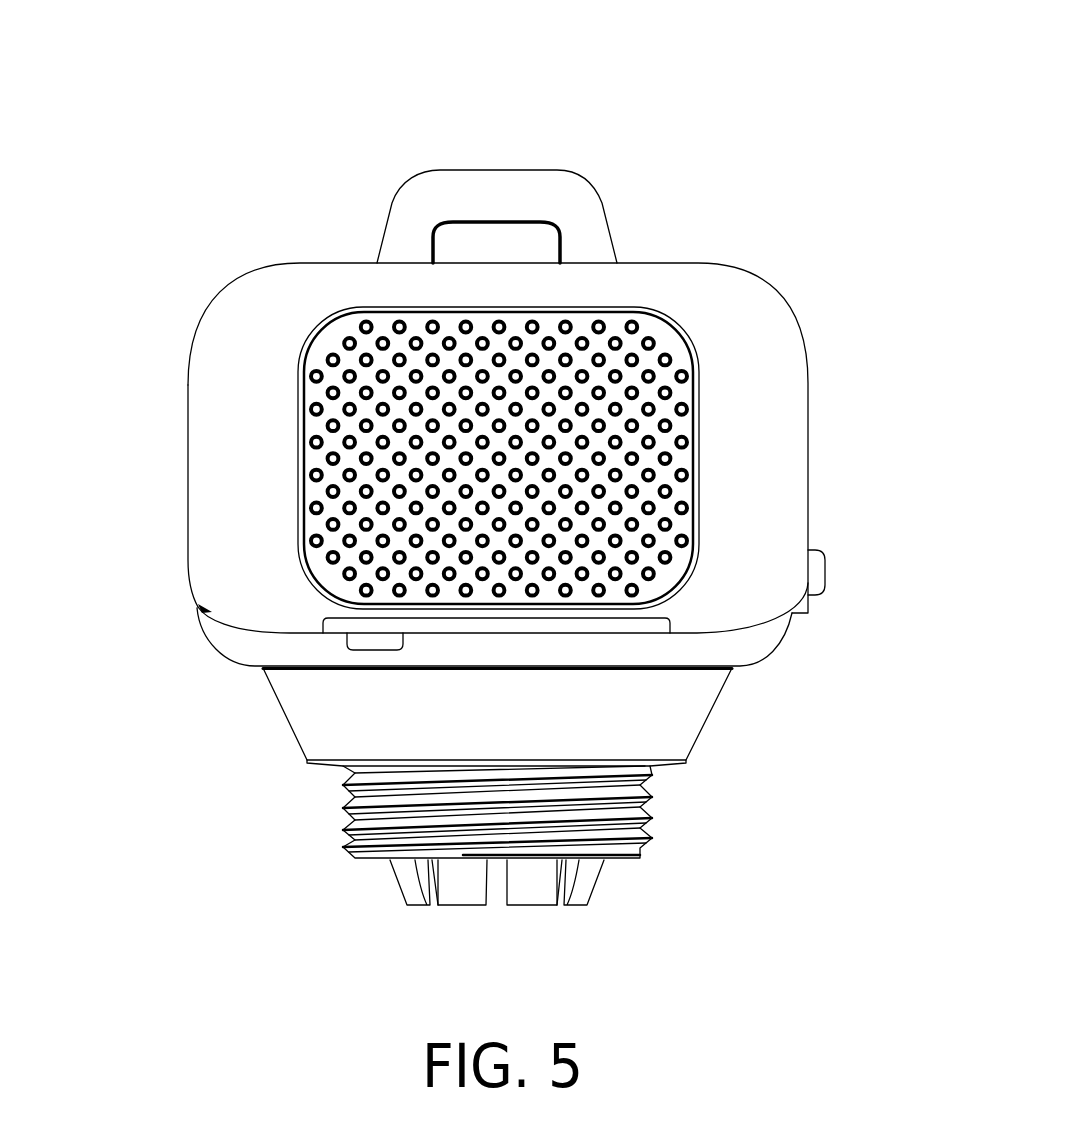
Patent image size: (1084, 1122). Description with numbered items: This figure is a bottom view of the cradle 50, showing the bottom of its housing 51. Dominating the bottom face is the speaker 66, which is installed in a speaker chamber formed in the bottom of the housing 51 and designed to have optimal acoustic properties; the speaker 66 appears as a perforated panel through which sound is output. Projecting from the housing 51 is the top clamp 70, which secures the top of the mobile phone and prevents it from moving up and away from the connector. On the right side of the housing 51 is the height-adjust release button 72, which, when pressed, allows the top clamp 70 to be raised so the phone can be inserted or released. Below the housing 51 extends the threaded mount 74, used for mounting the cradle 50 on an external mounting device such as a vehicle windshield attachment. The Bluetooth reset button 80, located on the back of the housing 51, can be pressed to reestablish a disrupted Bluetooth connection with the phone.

The cradle 50 is at (782, 103).
The housing 51 is at (767, 300).
The speaker 66 is at (327, 353).
The top clamp 70 is at (488, 177).
The height-adjust release button 72 is at (814, 570).
The threaded mount 74 is at (647, 813).
The Bluetooth reset button 80 is at (372, 640).